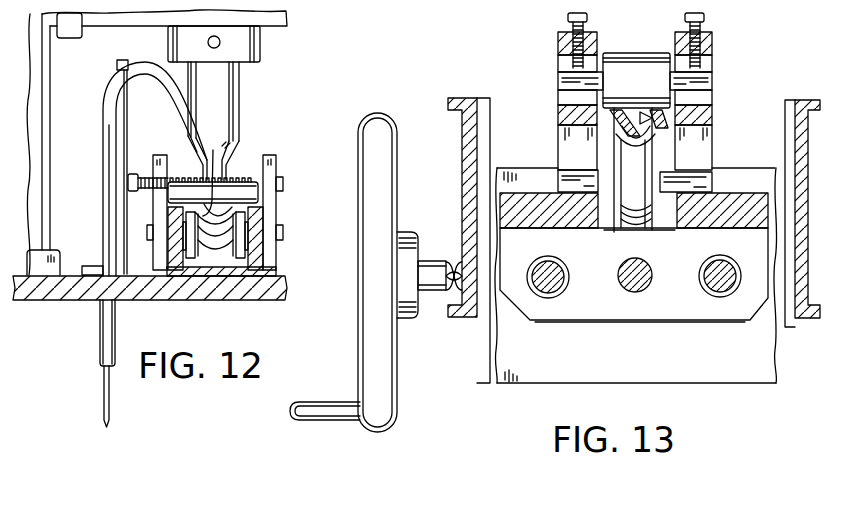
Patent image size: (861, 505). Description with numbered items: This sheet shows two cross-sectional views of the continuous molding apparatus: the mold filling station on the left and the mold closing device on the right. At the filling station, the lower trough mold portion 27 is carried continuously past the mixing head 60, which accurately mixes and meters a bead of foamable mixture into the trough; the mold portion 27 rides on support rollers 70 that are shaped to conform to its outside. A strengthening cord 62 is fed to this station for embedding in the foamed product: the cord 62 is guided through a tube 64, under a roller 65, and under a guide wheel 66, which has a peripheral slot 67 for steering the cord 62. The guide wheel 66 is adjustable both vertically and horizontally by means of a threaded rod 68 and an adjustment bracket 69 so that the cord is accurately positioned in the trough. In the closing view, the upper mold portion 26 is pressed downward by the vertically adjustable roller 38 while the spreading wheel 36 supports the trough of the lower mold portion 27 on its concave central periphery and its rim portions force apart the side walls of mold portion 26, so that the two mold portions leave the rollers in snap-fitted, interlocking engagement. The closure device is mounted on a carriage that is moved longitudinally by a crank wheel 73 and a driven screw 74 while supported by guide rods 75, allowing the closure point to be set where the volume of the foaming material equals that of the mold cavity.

In FIG. 13, the mold portion 26 is at (662, 128).
In FIG. 12, the mold portion 27 is at (193, 204).
In FIG. 13, the mold portion 27 is at (622, 135).
In FIG. 13, the spreading wheel 36 is at (614, 218).
In FIG. 13, the roller 38 is at (648, 91).
In FIG. 12, the mixing head 60 is at (204, 53).
In FIG. 12, the cord 62 is at (103, 385).
In FIG. 12, the tube 64 is at (103, 117).
In FIG. 12, the roller 65 is at (247, 190).
In FIG. 12, the guide wheel 66 is at (222, 165).
In FIG. 12, the peripheral slot 67 is at (213, 150).
In FIG. 12, the threaded rod 68 is at (145, 176).
In FIG. 12, the adjustment bracket 69 is at (126, 105).
In FIG. 12, the support rollers 70 is at (204, 250).
In FIG. 13, the crank wheel 73 is at (383, 383).
In FIG. 13, the driven screw 74 is at (640, 269).
In FIG. 13, the guide rods 75 is at (557, 283).